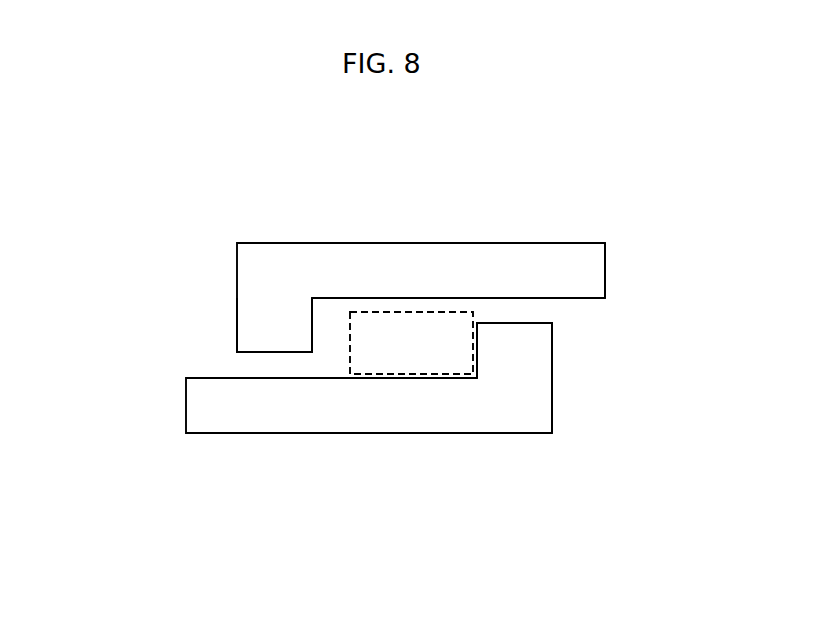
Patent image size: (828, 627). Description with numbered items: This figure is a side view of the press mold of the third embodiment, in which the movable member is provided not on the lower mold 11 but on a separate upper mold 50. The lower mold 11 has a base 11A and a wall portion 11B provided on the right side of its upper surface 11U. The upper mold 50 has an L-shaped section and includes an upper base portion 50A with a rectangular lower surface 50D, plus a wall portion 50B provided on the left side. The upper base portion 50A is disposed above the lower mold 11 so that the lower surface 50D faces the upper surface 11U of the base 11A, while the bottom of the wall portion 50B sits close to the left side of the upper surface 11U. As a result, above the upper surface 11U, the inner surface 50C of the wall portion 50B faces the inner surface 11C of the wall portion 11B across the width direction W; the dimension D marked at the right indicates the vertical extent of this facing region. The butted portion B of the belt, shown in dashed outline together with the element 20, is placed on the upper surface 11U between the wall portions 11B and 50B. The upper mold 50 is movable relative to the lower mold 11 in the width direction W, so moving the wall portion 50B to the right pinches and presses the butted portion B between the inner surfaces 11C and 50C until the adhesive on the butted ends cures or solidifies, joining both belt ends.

The upper mold 50 is at (500, 232).
The upper base portion 50A is at (453, 269).
The wall portion 50B is at (276, 326).
The inner surface 50C is at (312, 325).
The lower surface 50D is at (543, 297).
The coil (dashed) 20 is at (390, 310).
The lower mold 11 is at (438, 445).
The base 11A is at (357, 407).
The wall portion 11B is at (514, 350).
The inner surface 11C is at (477, 350).
The upper surface 11U is at (325, 378).
The butted portion B is at (405, 380).
The depth dimension D is at (667, 314).
The width direction W is at (364, 554).